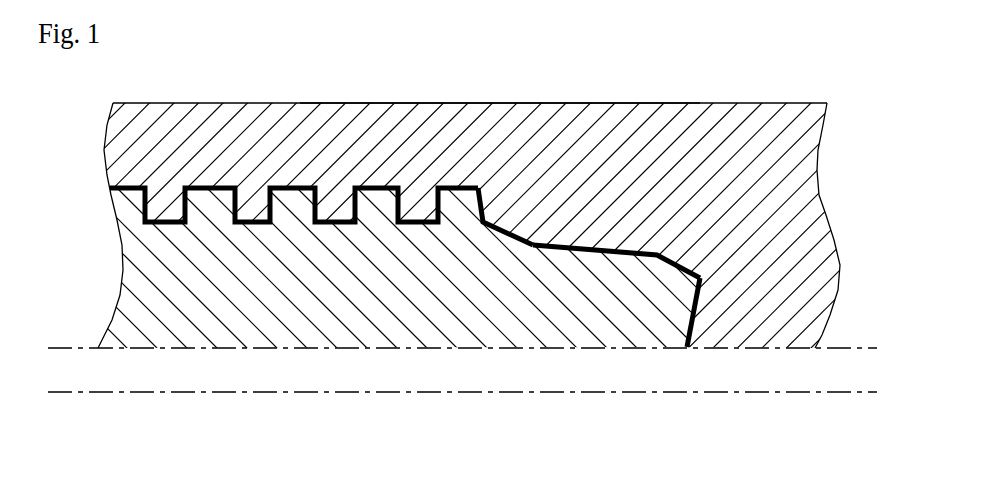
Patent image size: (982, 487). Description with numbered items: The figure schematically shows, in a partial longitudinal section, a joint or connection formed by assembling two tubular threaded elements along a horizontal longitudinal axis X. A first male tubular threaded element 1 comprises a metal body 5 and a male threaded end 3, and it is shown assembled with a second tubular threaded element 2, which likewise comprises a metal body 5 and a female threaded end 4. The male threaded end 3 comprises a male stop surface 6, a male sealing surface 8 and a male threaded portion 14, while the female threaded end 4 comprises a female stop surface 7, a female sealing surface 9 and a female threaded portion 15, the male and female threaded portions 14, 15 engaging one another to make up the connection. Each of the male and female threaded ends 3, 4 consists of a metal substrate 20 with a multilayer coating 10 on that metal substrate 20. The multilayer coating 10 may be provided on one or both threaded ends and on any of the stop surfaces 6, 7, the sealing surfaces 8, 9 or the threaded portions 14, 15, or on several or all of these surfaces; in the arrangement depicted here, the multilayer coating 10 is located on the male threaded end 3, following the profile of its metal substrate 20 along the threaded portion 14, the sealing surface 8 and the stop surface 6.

The first male tubular threaded element 1 is at (122, 293).
The second tubular threaded element 2 is at (776, 125).
The male threaded end 3 is at (568, 324).
The female threaded end 4 is at (698, 143).
The metal body 5 is at (795, 222).
The male stop surface 6 is at (687, 322).
The female stop surface 7 is at (700, 300).
The male sealing surface 8 is at (527, 203).
The female sealing surface 9 is at (524, 198).
The multilayer coating 10 is at (115, 217).
The male threaded portion 14 is at (382, 224).
The female threaded portion 15 is at (298, 186).
The metal substrate 20 is at (417, 196).
The longitudinal axis X is at (822, 392).